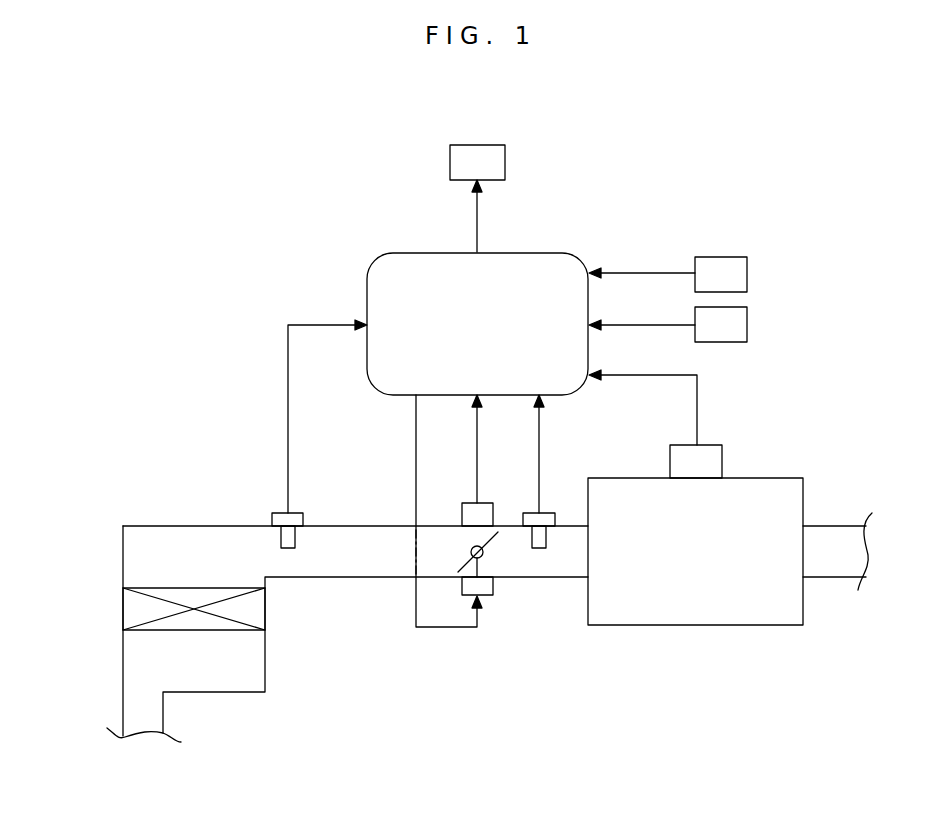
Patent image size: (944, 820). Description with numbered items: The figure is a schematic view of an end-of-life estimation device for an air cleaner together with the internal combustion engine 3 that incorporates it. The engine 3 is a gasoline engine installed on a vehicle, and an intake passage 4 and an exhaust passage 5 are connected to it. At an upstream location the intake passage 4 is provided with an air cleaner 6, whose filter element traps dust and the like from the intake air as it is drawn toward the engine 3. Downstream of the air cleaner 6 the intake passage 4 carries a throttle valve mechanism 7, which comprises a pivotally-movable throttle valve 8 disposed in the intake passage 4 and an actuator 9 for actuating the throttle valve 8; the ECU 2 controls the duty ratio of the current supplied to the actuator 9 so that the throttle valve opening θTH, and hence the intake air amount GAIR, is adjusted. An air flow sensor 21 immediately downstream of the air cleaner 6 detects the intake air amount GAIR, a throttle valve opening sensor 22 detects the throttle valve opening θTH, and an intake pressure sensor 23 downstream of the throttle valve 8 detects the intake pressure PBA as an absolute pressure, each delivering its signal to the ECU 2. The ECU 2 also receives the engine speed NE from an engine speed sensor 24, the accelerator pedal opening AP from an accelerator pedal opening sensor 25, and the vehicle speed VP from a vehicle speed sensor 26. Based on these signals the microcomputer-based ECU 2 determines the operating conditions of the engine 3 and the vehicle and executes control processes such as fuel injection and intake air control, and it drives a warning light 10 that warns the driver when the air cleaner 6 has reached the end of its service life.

The ECU 2 is at (530, 253).
The internal combustion engine 3 is at (776, 478).
The intake passage 4 is at (350, 580).
The exhaust pipe 5 is at (828, 578).
The air cleaner 6 is at (126, 607).
The throttle valve mechanism 7 is at (512, 612).
The throttle valve 8 is at (495, 537).
The actuator 9 is at (490, 597).
The warning light 10 is at (506, 152).
The air flow sensor 21 is at (278, 513).
The throttle valve opening sensor 22 is at (484, 503).
The intake pressure sensor 23 is at (546, 513).
The engine speed sensor 24 is at (713, 445).
The accelerator pedal opening sensor 25 is at (748, 268).
The vehicle speed sensor 26 is at (748, 318).